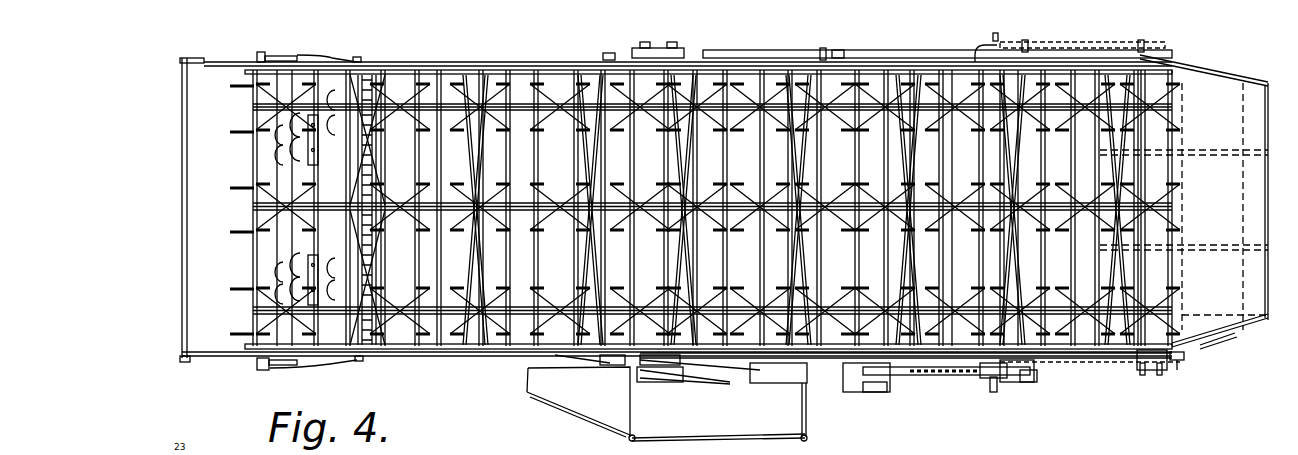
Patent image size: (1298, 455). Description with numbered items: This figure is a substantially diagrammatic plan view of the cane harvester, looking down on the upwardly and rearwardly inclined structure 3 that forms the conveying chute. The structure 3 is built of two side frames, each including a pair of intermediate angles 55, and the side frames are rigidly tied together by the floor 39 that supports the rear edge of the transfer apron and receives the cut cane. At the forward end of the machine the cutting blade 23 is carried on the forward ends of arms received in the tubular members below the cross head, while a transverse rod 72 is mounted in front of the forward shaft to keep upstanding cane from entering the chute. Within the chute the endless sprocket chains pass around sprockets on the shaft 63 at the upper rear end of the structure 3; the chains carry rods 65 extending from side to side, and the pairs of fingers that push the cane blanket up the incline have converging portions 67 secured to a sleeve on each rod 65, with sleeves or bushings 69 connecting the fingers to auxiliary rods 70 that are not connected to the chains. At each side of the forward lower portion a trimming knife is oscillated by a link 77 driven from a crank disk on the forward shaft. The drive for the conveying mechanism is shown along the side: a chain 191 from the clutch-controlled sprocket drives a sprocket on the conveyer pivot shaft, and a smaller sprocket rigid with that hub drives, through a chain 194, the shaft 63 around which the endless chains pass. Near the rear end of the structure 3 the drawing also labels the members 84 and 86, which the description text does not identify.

The upwardly and rearwardly inclined structure 3 is at (413, 338).
The cutting blade 23 is at (287, 150).
The floor 39 is at (772, 417).
The intermediate angles 55 is at (360, 142).
The shaft 63 is at (1143, 265).
The rods 65 is at (577, 168).
The converging portions 67 is at (1233, 93).
The sleeves or bushings 69 is at (1177, 362).
The auxiliary rods 70 is at (536, 172).
The transverse rod 72 is at (183, 264).
The link 77 is at (305, 57).
The bracket arm 84 is at (1227, 340).
The support beam 86 is at (1253, 320).
The chain 191 is at (968, 375).
The chain 194 is at (1087, 33).